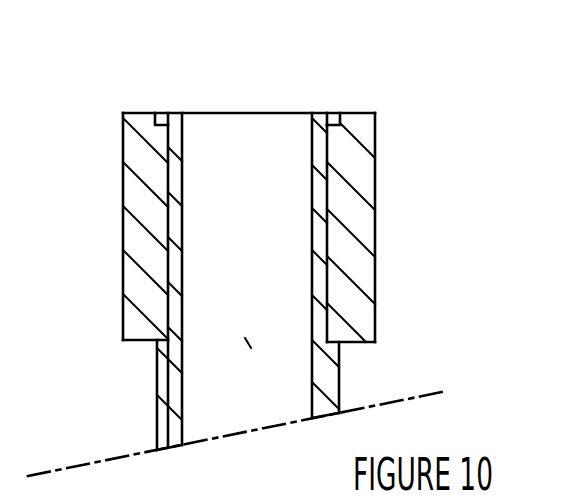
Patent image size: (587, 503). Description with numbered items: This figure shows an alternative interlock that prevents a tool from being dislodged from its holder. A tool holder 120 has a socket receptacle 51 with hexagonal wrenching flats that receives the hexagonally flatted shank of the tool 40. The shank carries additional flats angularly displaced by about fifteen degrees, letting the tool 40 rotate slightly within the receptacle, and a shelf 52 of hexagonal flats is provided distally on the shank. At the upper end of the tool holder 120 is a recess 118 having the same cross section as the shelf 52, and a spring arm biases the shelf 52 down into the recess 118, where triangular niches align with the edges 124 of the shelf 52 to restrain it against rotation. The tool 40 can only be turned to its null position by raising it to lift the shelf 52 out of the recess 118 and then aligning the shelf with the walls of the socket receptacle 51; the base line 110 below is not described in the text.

The tool 40 is at (165, 362).
The socket receptacle 51 is at (323, 250).
The shelf 52 is at (160, 114).
The base surface 110 is at (237, 447).
The recess 118 is at (345, 116).
The tool holder 120 is at (375, 225).
The edges of the shelf 124 is at (337, 120).